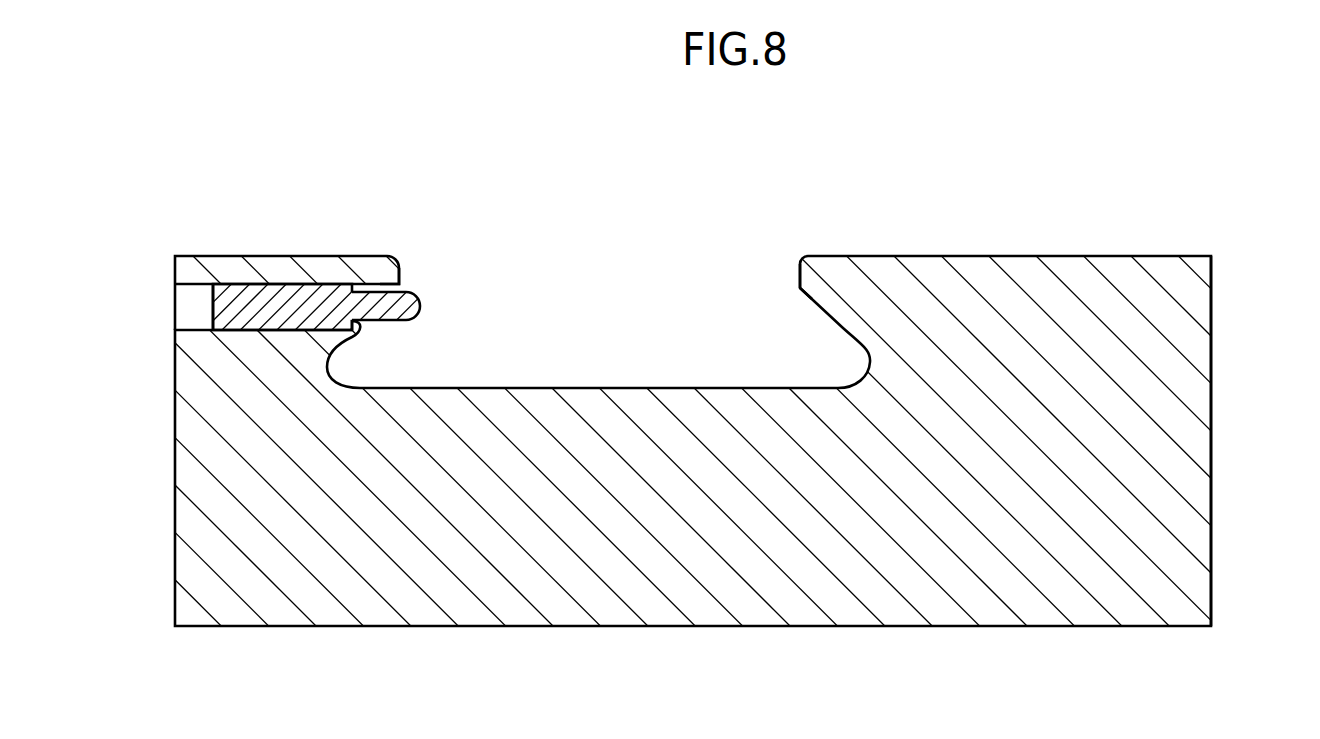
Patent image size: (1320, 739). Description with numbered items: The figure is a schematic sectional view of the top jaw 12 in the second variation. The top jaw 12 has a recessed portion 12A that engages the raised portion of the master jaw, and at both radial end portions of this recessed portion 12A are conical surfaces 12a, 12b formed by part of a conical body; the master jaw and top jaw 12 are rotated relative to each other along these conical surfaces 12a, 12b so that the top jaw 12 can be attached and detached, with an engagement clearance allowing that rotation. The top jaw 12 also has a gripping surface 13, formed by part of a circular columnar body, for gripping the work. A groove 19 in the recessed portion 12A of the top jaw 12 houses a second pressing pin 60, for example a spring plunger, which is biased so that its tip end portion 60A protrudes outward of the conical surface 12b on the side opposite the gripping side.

The top jaw 12 is at (1143, 222).
The conical surface 12a is at (800, 287).
The conical surface 12b is at (402, 297).
The recessed portion 12A is at (627, 374).
The gripping surface 13 is at (1211, 402).
The groove 19 is at (198, 300).
The second pressing pin 60 is at (293, 300).
The tip end portion 60A is at (420, 301).